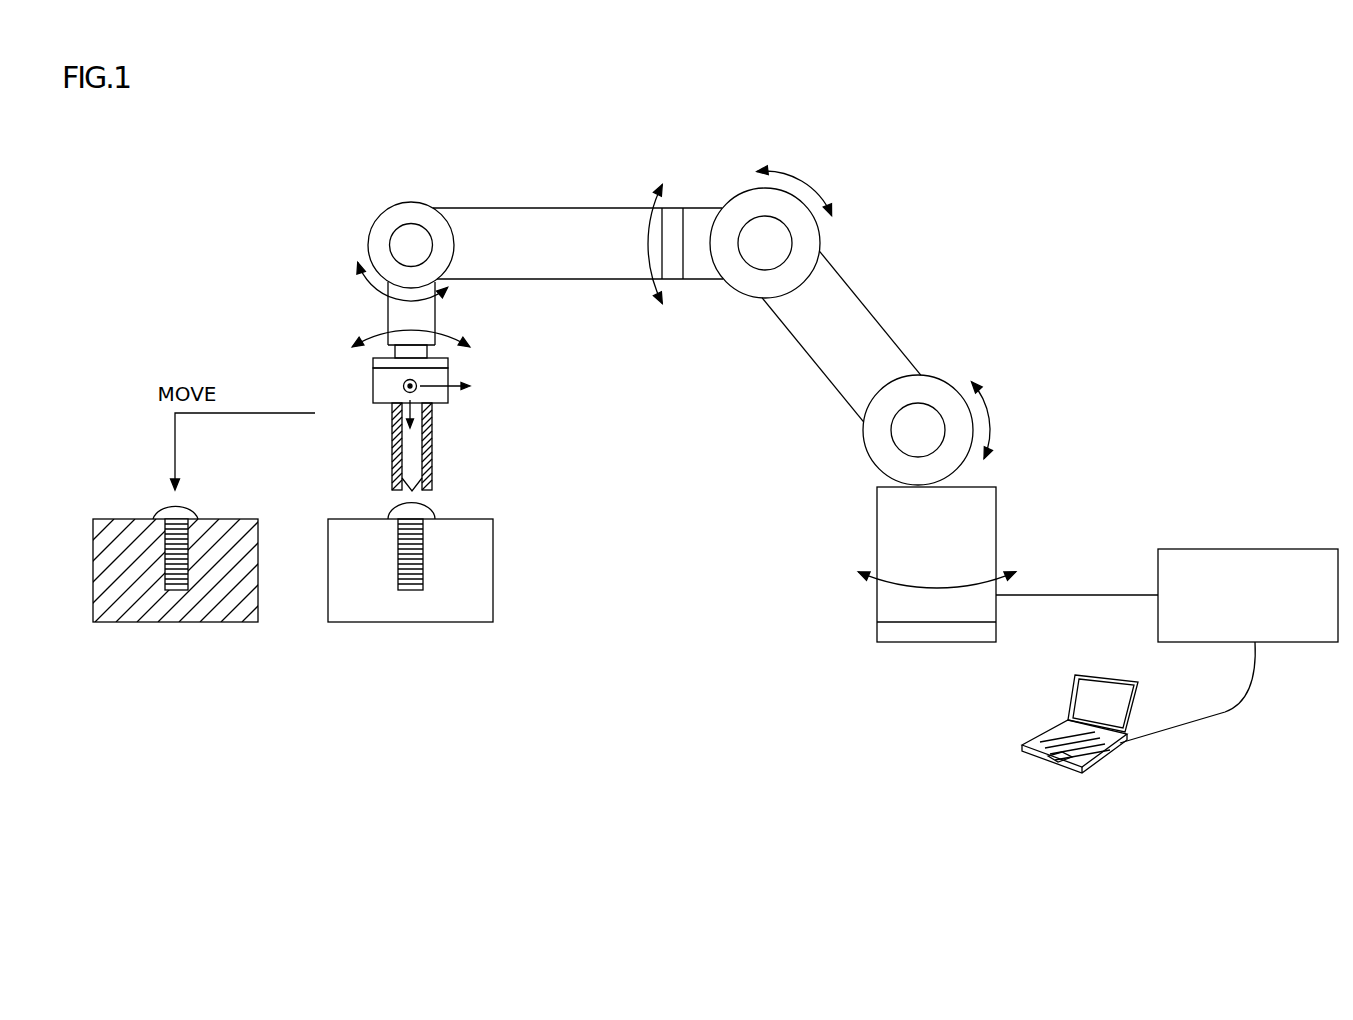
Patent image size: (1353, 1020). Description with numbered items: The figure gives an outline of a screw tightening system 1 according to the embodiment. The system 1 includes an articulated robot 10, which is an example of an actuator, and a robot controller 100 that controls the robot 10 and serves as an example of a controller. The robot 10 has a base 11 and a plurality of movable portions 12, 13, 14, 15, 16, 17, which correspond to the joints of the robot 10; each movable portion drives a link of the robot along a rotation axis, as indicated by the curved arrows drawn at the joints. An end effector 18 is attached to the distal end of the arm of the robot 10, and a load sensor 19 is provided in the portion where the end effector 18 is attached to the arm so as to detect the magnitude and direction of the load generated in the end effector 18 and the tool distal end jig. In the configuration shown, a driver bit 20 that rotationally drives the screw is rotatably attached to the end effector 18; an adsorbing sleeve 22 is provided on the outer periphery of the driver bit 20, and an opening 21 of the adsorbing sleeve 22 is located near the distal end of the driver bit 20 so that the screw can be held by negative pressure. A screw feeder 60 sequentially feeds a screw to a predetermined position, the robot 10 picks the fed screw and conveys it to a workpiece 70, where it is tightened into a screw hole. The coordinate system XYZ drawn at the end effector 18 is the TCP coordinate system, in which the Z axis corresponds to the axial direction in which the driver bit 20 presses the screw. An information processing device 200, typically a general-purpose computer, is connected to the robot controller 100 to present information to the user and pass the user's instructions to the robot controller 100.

The screw tightening system 1 is at (1298, 115).
The robot 10 is at (988, 240).
The base 11 is at (972, 632).
The movable portion 12 is at (980, 518).
The movable portion 13 is at (925, 403).
The movable portion 14 is at (795, 240).
The movable portion 15 is at (672, 218).
The movable portion 16 is at (410, 213).
The movable portion 17 is at (397, 352).
The end effector 18 is at (373, 388).
The load sensor 19 is at (450, 363).
The driver bit 20 is at (411, 455).
The opening 21 is at (393, 489).
The adsorbing sleeve 22 is at (392, 440).
The screw feeder 60 is at (410, 584).
The workpiece 70 is at (178, 586).
The robot controller 100 is at (1277, 549).
The information processing device 200 is at (1100, 758).